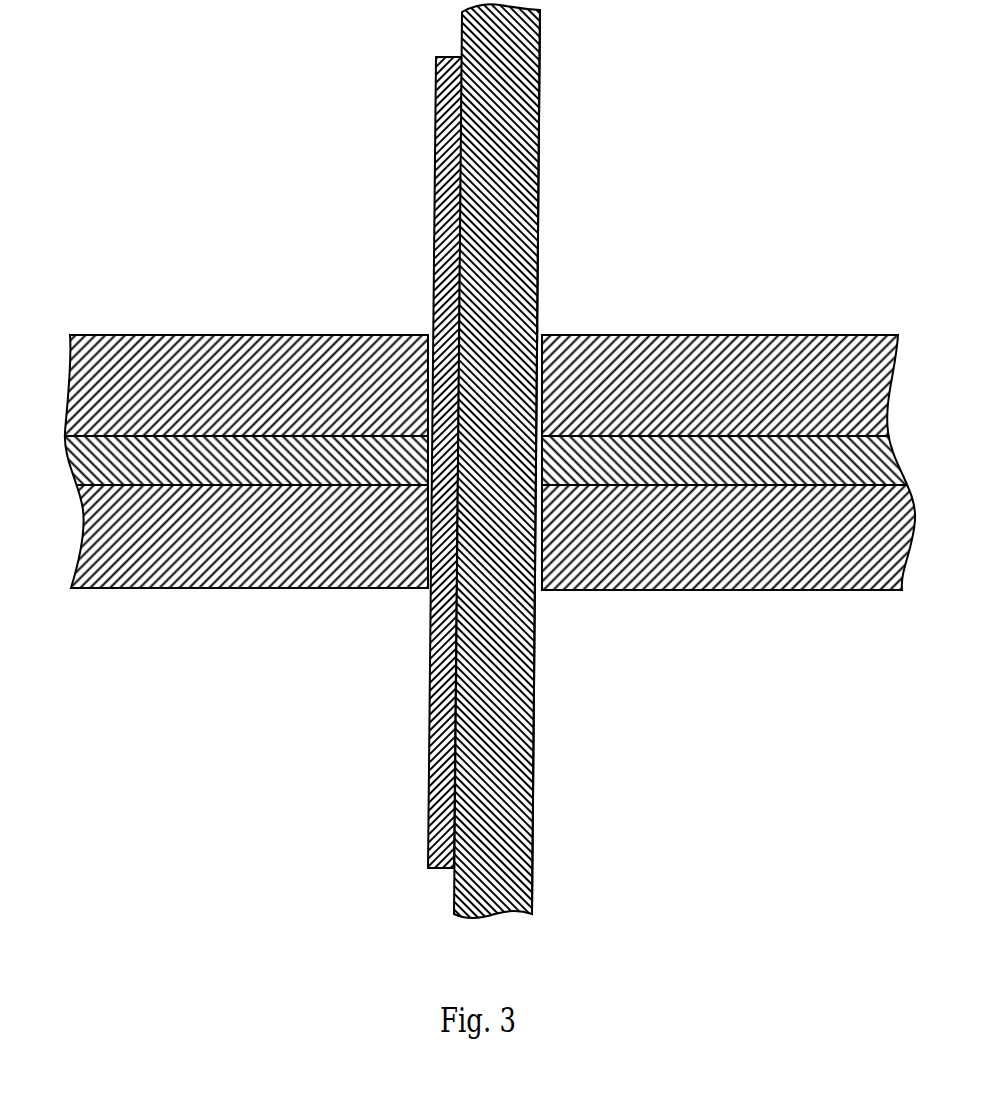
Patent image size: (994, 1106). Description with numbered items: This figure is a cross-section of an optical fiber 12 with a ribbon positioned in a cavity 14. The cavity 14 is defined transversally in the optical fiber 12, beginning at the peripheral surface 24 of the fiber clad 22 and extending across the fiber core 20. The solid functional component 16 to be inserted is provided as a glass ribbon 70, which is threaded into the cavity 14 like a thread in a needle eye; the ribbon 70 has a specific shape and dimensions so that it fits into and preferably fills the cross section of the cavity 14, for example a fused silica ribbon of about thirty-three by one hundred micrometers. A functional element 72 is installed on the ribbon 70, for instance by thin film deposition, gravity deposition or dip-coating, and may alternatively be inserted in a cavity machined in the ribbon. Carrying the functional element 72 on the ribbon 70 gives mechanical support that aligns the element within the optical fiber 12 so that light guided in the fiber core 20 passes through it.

The optical fiber 12 is at (147, 587).
The cavity 14 is at (541, 335).
The solid functional component 16 is at (540, 118).
The fiber core 20 is at (70, 462).
The fiber clad 22 is at (732, 511).
The peripheral surface 24 is at (693, 337).
The ribbon 70 is at (538, 237).
The functional element 72 is at (435, 117).